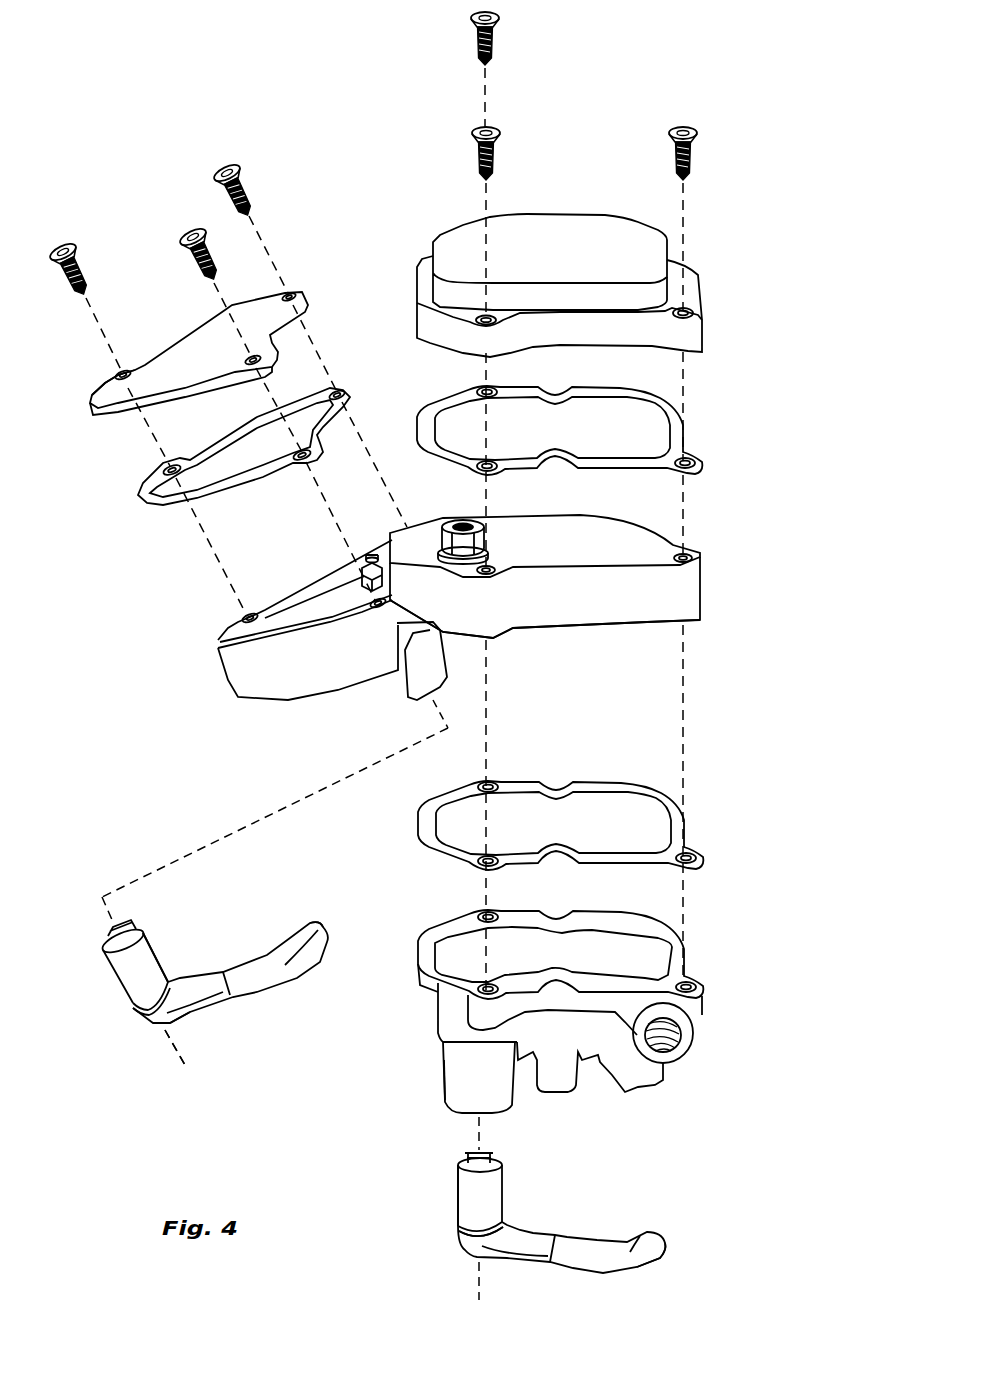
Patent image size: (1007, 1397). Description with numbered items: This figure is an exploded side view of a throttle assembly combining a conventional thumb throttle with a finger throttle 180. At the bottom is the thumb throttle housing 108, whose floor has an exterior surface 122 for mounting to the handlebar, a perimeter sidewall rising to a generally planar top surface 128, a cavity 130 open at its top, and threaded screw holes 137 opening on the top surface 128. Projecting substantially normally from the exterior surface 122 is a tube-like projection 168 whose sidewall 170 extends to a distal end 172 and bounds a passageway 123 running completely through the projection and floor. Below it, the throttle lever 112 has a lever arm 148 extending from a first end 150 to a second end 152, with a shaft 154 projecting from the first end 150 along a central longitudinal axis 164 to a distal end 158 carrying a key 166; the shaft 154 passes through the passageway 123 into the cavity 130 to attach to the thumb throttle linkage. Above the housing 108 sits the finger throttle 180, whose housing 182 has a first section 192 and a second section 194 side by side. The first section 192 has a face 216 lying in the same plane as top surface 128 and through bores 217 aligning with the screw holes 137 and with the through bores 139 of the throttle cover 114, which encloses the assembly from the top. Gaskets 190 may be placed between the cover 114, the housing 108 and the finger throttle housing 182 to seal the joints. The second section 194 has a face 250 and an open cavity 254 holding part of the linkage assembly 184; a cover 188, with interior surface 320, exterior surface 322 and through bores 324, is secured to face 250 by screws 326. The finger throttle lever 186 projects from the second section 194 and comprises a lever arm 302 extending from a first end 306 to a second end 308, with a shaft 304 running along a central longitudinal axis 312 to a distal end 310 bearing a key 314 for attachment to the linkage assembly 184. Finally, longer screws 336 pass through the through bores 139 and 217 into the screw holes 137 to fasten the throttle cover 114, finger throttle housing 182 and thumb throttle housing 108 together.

The housing 108 is at (559, 1007).
The throttle lever 112 is at (470, 1218).
The throttle cover 114 is at (655, 245).
The exterior surface 122 is at (436, 1010).
The passageway 123 is at (465, 1111).
The top surface 128 is at (425, 960).
The cavity 130 is at (640, 945).
The threaded screw holes 137 is at (705, 983).
The through bores 139 is at (692, 307).
The lever arm 148 is at (630, 1250).
The first end 150 is at (542, 1215).
The second end 152 is at (662, 1268).
The shaft 154 is at (494, 1192).
The distal end 158 is at (448, 1166).
The central longitudinal axis 164 is at (477, 1278).
The key 166 is at (492, 1157).
The tube-like projection 168 is at (450, 1050).
The sidewall 170 is at (444, 1085).
The distal end 172 is at (434, 1106).
The finger throttle 180 is at (557, 574).
The housing 182 is at (245, 700).
The linkage assembly 184 is at (348, 600).
The throttle lever 186 is at (138, 995).
The cover 188 is at (110, 400).
The gasket 190 is at (680, 440).
The first section 192 is at (700, 595).
The second section 194 is at (240, 688).
The face 216 is at (652, 625).
The through bores 217 is at (690, 550).
The face 250 is at (284, 630).
The cavity 254 is at (312, 605).
The lever arm 302 is at (283, 967).
The shaft 304 is at (152, 960).
The first end 306 is at (320, 978).
The second end 308 is at (184, 1021).
The distal end 310 is at (231, 909).
The central longitudinal axis 312 is at (175, 1052).
The key 314 is at (112, 937).
The interior surface 320 is at (108, 415).
The exterior surface 322 is at (165, 373).
The through bores 324 is at (115, 372).
The screws 326 is at (190, 233).
The longer screws 336 is at (683, 128).